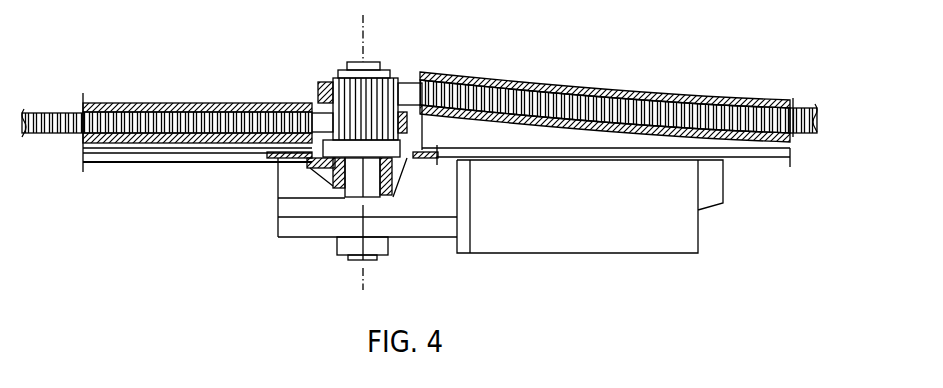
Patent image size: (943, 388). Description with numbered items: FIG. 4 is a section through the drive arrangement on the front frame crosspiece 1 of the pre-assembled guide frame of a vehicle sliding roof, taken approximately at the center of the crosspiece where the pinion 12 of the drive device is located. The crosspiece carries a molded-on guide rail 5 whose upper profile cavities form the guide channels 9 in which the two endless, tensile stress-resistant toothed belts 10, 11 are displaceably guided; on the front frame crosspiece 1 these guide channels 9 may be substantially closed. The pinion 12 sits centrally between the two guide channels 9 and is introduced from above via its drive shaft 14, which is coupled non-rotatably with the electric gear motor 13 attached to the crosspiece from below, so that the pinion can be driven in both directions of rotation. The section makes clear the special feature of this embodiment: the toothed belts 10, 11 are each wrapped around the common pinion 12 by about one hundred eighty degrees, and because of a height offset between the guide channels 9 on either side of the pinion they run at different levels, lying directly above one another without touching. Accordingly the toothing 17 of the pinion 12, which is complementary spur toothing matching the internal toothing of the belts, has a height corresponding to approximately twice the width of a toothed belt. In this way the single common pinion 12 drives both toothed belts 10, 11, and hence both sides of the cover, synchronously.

The front frame crosspiece 1 is at (122, 156).
The guide rail 5 is at (125, 100).
The guide channels 9 is at (211, 107).
The toothed belt 10 is at (50, 110).
The toothed belt 11 is at (807, 107).
The pinion 12 is at (398, 72).
The electric gear motor 13 is at (512, 225).
The drive shaft 14 is at (352, 178).
The toothing 17 is at (456, 73).